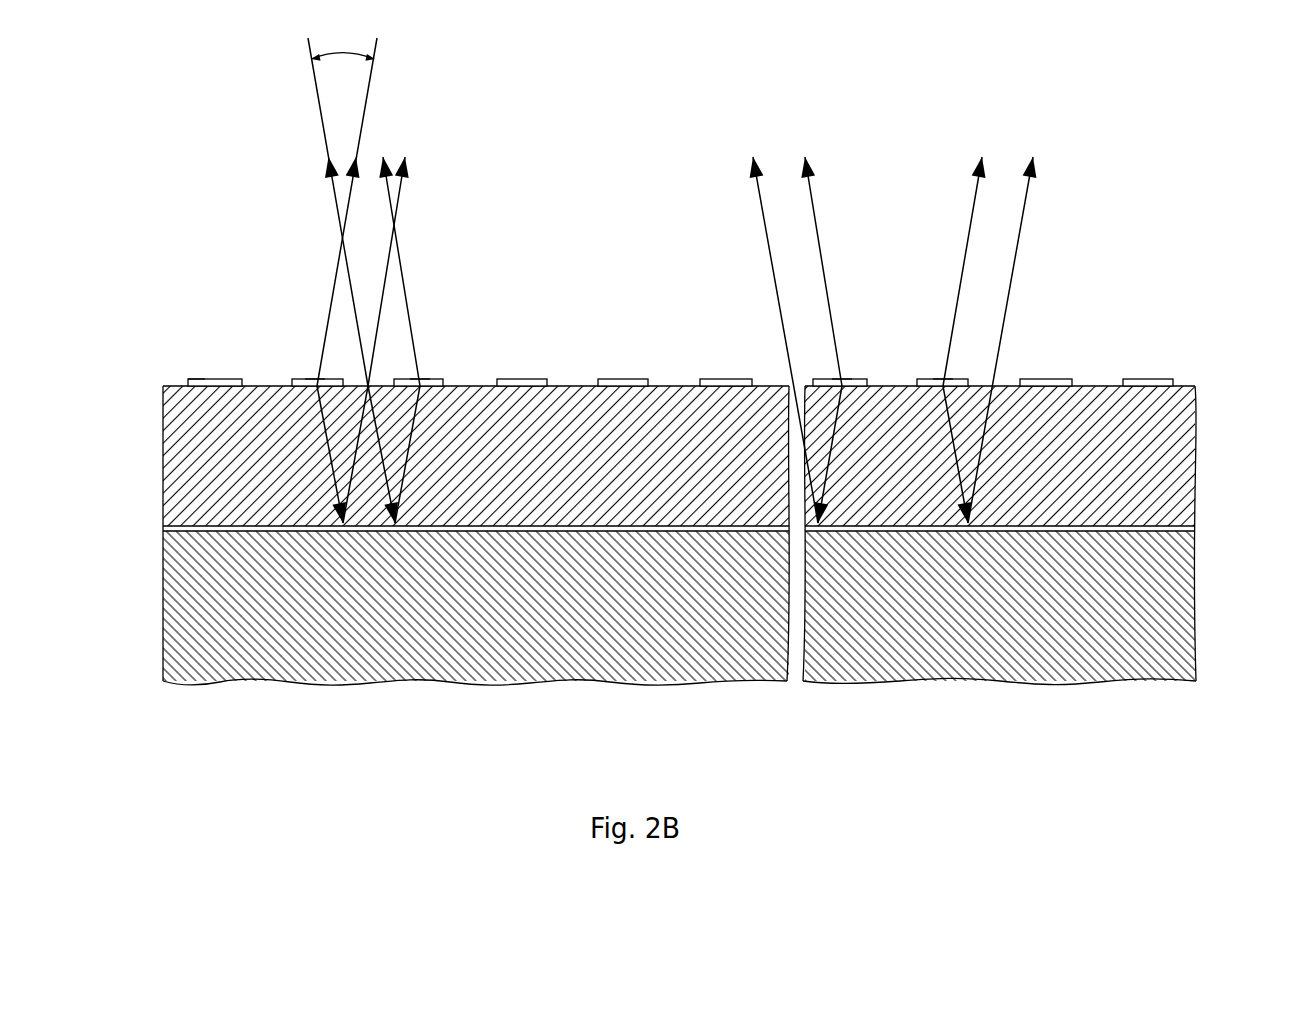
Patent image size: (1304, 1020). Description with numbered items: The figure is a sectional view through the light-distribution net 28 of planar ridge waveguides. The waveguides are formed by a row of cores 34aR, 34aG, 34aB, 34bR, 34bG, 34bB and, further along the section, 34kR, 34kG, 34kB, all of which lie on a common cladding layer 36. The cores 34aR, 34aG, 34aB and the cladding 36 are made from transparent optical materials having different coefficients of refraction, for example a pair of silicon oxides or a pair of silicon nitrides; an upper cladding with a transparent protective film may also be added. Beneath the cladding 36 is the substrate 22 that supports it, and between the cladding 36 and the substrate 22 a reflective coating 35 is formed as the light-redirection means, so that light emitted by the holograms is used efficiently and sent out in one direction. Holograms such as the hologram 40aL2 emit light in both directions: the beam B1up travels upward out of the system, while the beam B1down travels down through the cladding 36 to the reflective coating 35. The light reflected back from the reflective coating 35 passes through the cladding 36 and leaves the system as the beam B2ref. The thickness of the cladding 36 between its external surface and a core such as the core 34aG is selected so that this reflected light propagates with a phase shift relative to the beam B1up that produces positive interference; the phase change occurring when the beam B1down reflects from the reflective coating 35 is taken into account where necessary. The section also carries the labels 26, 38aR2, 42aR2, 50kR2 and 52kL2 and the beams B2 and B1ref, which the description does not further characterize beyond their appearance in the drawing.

The substrate 22 is at (312, 622).
The top surface of light guide layer 26 is at (683, 386).
The net 28 is at (1178, 375).
The core 34aR is at (190, 379).
The core 34aG is at (293, 379).
The core 34aB is at (443, 379).
The core 34bR is at (547, 379).
The core 34bG is at (648, 379).
The core 34bB is at (752, 379).
The core 34kR is at (867, 379).
The core 34kG is at (968, 379).
The core 34kB is at (1072, 379).
The reflective coating 35 is at (1163, 525).
The cladding layer 36 is at (223, 463).
The emission point 38aR2 is at (190, 379).
The hologram 40aL2 is at (310, 379).
The right emission point 42aR2 is at (427, 379).
The right emission point 50kR2 is at (846, 379).
The left emission point 52kL2 is at (943, 379).
The beam B2 is at (338, 200).
The upward beam B1up is at (333, 283).
The downward beam B1down is at (327, 463).
The reflected beam B1 B1ref is at (385, 293).
The reflected beam B2ref is at (390, 183).